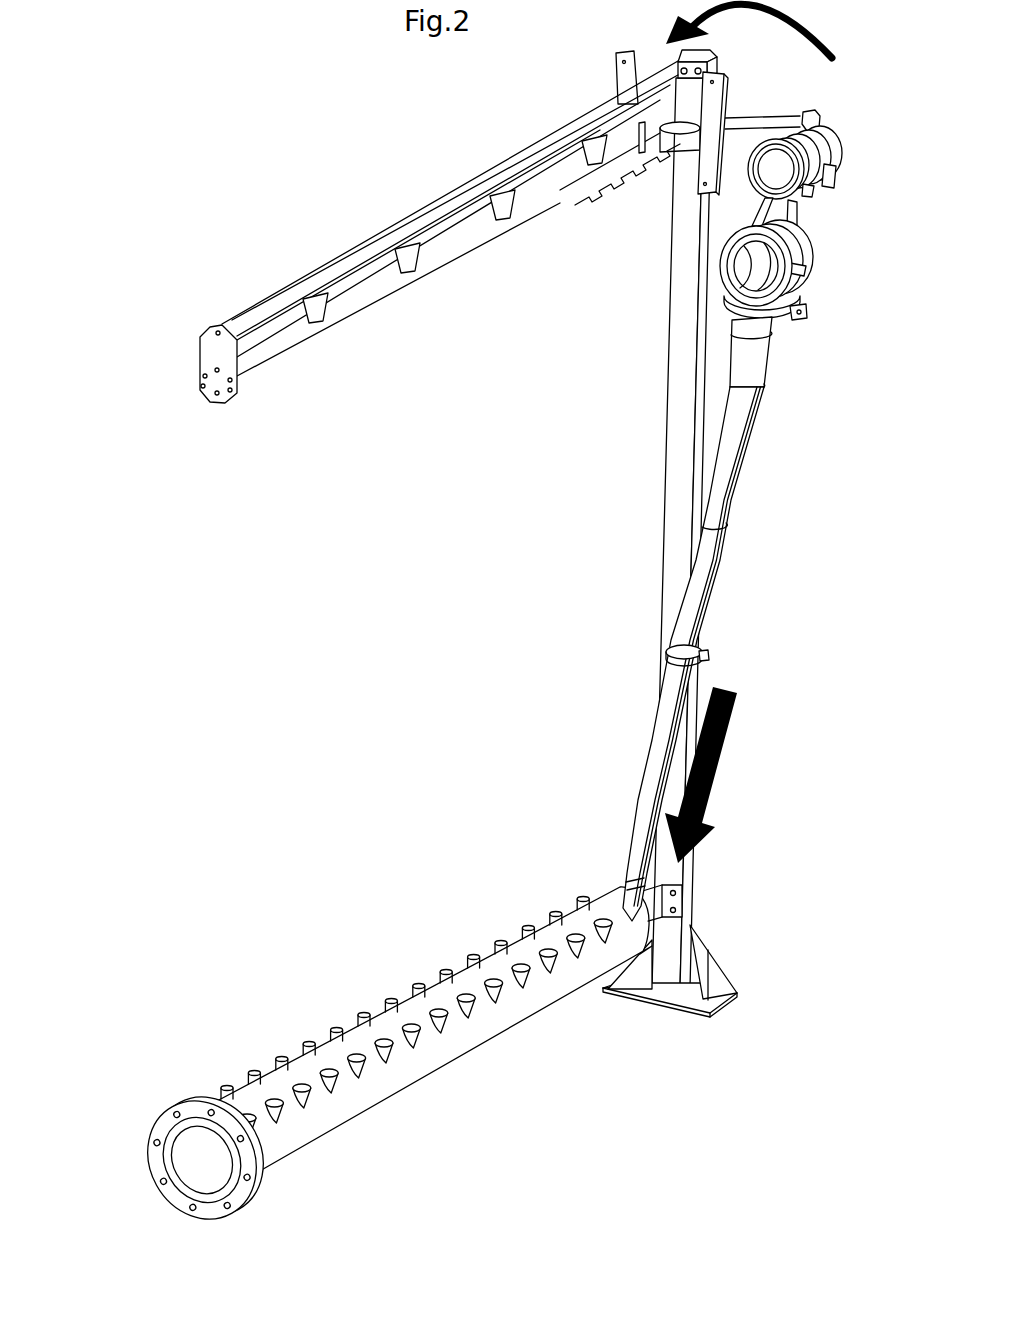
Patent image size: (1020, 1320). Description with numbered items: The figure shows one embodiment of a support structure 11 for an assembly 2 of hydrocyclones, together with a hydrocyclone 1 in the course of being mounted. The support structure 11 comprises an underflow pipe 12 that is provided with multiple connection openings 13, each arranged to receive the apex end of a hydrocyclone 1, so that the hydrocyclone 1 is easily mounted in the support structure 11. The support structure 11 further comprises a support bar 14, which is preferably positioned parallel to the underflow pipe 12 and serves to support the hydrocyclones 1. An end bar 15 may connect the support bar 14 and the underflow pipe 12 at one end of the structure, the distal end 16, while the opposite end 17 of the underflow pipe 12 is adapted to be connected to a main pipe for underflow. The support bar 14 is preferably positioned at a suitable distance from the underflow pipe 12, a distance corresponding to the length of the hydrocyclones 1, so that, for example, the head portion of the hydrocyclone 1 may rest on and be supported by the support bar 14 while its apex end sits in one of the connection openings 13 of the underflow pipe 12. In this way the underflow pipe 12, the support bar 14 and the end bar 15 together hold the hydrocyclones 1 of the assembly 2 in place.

The hydrocyclone 1 is at (737, 453).
The assembly 2 is at (758, 34).
The support structure 11 is at (172, 526).
The underflow pipe 12 is at (386, 1032).
The connection openings 13 is at (417, 1043).
The support bar 14 is at (338, 278).
The end bar 15 is at (683, 333).
The distal end 16 is at (730, 926).
The opposite end 17 is at (150, 1099).